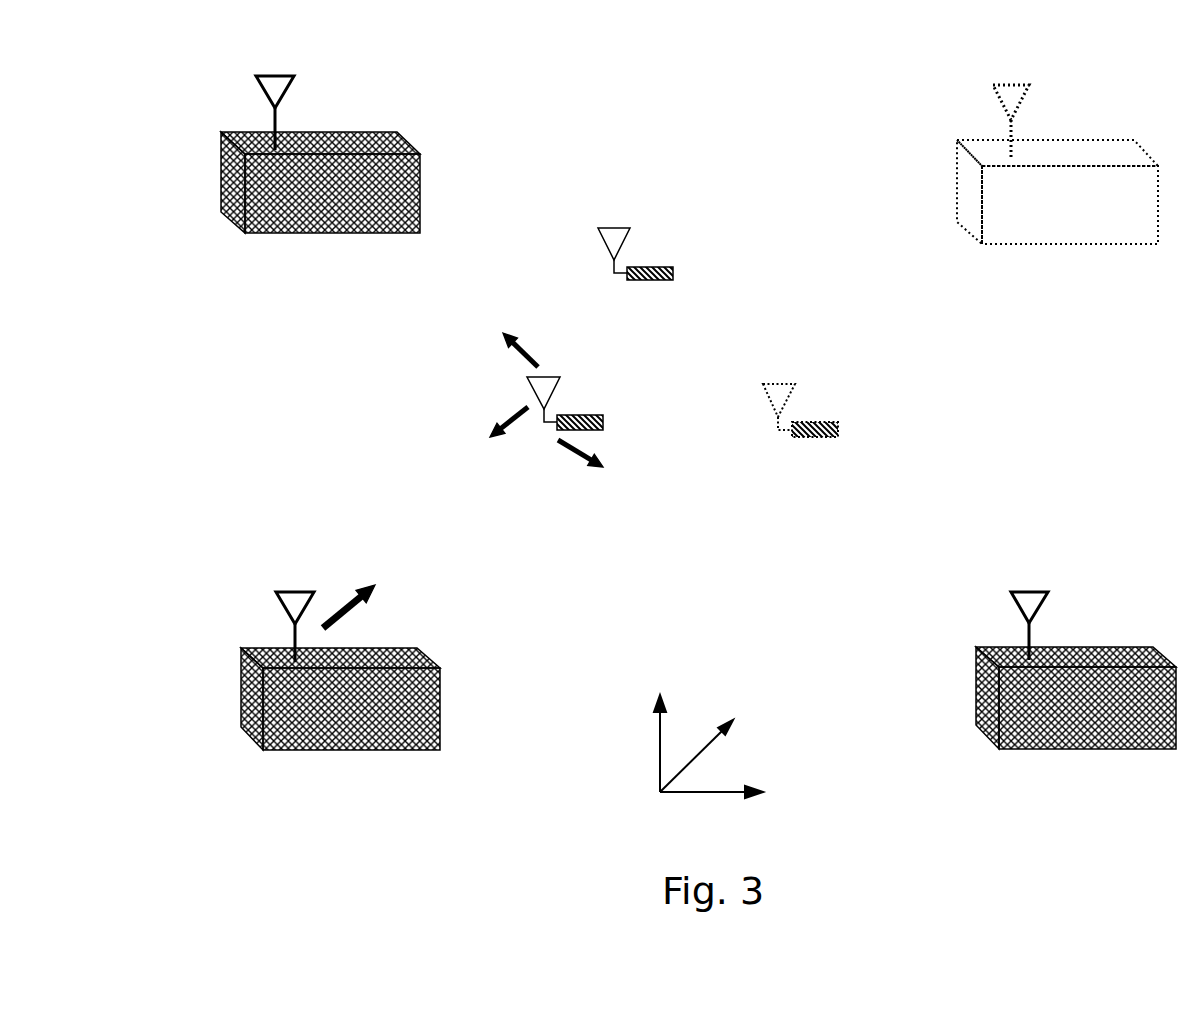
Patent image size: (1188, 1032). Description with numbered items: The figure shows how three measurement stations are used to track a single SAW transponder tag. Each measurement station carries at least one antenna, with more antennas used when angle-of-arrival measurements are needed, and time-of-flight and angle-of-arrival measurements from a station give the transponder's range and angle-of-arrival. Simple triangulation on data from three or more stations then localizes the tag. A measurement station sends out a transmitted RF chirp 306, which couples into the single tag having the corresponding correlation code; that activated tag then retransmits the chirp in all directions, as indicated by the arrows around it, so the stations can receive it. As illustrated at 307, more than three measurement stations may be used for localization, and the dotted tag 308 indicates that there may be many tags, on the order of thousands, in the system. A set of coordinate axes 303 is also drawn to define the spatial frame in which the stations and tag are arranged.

The coordinate system axes 303 is at (667, 767).
The transmitted RF chirp 306 is at (383, 607).
The additional measurement station 307 is at (1012, 220).
The tags 308 is at (838, 423).